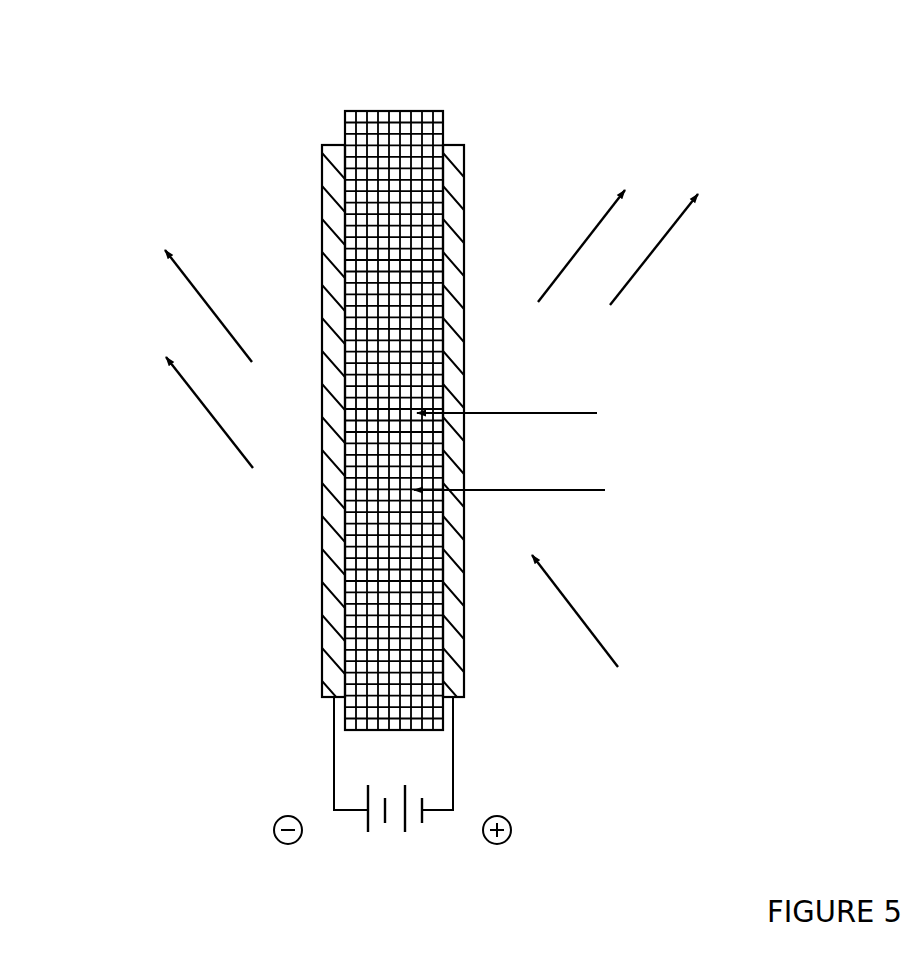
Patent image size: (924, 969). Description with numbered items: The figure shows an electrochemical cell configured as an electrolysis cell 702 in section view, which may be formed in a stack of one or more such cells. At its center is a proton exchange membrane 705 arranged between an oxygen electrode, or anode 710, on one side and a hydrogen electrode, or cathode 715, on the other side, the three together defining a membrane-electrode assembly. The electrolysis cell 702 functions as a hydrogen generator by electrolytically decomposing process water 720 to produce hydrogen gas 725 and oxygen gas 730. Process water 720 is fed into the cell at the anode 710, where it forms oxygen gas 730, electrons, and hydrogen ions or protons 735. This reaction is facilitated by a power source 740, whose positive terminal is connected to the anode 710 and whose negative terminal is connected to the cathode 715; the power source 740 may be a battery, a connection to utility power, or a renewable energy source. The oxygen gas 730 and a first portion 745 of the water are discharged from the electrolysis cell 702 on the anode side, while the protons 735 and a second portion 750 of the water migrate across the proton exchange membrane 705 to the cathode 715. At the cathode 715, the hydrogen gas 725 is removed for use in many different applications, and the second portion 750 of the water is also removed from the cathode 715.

The electrolysis cell 702 is at (522, 136).
The proton exchange membrane 705 is at (402, 111).
The hydrogen electrode (cathode) 715 is at (322, 158).
The oxygen electrode (anode) 710 is at (464, 162).
The hydrogen gas 725 is at (220, 320).
The second portion of the water 750 is at (192, 395).
The oxygen gas 730 is at (587, 237).
The first portion of the water 745 is at (655, 250).
The hydrogen ions (protons) 735 is at (502, 413).
The process water 720 is at (578, 617).
The power source 740 is at (453, 752).